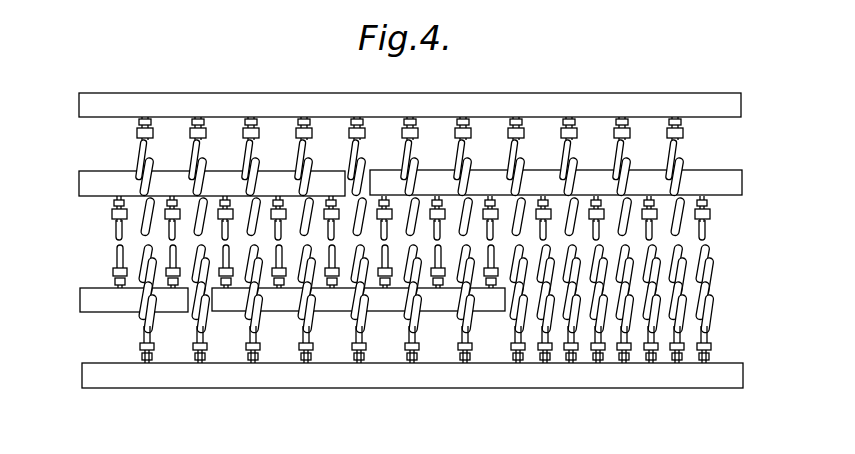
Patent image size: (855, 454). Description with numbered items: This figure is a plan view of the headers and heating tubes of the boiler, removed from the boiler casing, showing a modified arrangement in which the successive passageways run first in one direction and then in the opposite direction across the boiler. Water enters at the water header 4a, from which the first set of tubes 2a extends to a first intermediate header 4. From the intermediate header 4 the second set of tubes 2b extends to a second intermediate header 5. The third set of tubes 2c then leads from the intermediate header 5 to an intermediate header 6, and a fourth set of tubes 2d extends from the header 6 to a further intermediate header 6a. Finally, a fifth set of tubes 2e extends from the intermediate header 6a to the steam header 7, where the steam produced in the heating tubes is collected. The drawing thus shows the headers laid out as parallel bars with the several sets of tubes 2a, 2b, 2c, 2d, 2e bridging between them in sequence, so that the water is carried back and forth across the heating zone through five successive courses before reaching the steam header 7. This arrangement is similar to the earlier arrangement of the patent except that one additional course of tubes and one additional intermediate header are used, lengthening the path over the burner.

The steam header 7 is at (740, 107).
The intermediate header 6 is at (730, 183).
The first intermediate header 4 is at (92, 185).
The water header 4a is at (93, 299).
The second intermediate header 5 is at (332, 300).
The intermediate header 6a is at (88, 378).
The first set of tubes 2a is at (175, 251).
The second set of tubes 2b is at (333, 258).
The third set of tubes 2c is at (493, 253).
The fourth set of tubes 2d is at (645, 333).
The fifth set of tubes 2e is at (253, 333).